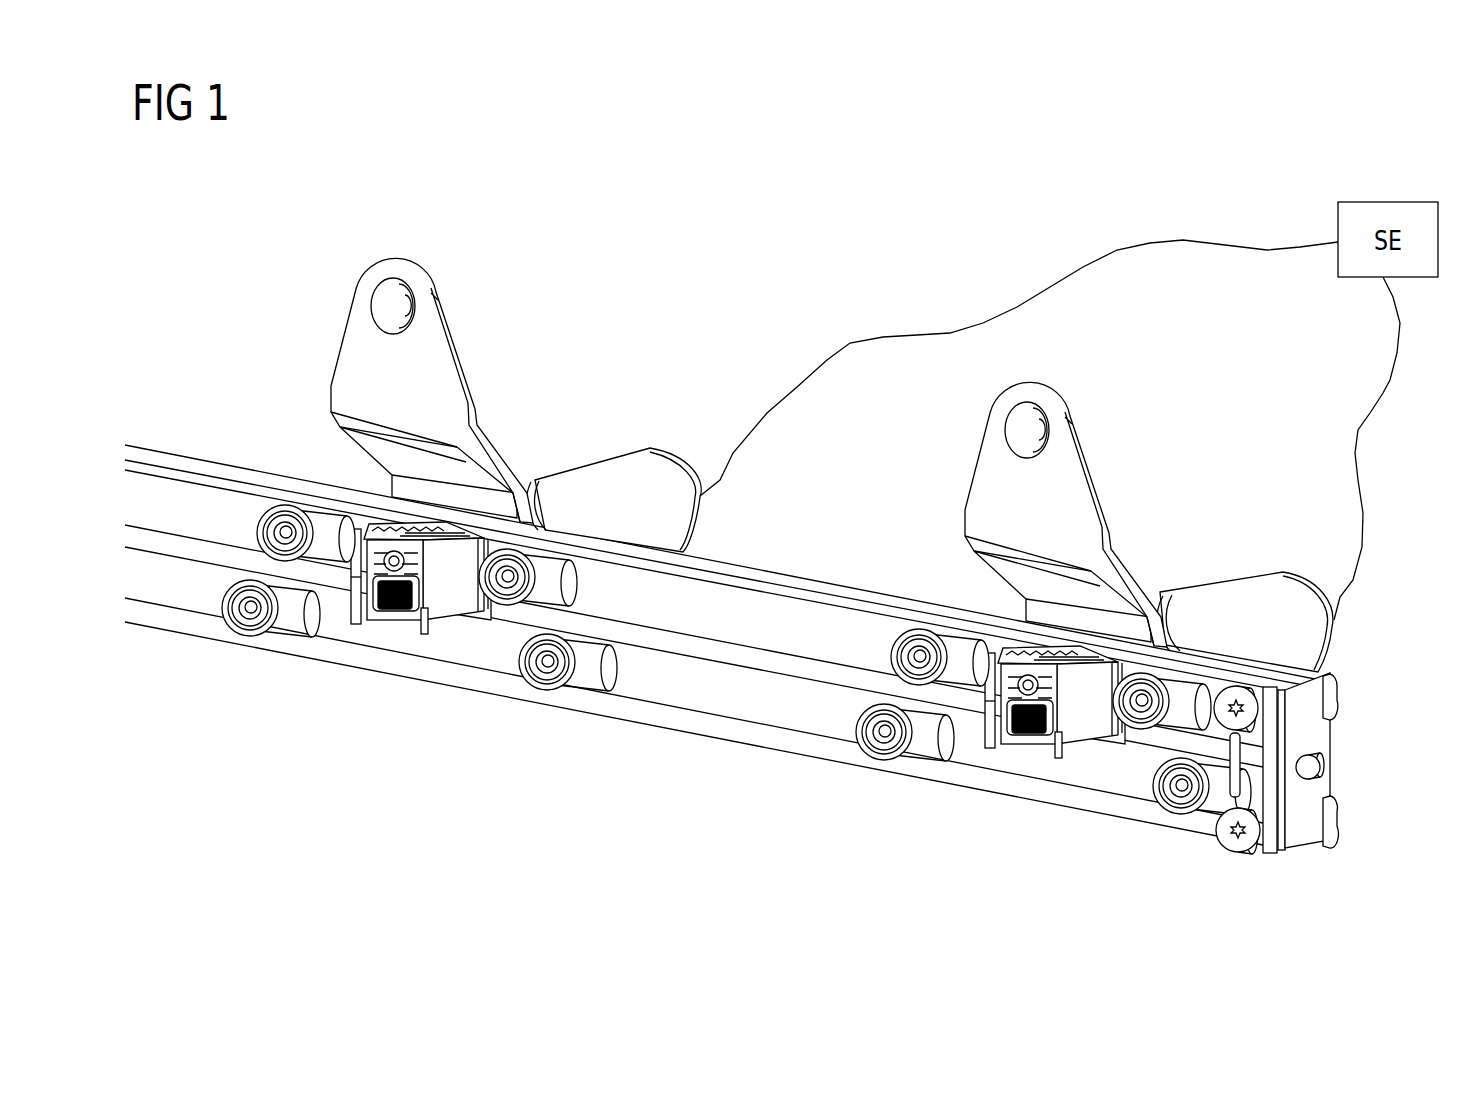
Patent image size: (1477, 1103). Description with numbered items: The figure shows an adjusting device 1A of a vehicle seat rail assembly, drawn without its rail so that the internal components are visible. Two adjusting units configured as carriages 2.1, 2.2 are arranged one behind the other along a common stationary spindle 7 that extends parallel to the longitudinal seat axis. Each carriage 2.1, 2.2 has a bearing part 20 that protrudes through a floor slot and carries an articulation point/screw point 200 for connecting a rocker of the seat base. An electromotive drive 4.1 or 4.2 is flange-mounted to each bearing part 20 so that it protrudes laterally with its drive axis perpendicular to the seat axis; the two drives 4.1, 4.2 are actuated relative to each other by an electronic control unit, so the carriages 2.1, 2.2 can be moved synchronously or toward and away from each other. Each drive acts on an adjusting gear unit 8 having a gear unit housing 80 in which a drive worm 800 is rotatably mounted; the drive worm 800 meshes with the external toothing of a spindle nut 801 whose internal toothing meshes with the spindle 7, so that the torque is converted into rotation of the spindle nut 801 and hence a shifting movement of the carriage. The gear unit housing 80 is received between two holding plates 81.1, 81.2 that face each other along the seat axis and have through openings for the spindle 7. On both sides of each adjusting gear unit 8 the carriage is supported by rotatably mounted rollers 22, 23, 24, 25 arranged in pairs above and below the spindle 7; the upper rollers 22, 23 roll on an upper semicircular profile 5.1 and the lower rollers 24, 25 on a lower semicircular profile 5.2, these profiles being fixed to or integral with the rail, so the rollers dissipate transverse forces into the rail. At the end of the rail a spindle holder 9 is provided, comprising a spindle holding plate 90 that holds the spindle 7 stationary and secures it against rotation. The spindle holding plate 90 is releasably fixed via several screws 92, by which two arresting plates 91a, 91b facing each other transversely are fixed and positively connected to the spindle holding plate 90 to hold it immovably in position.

The adjusting device 1A is at (705, 644).
The semicircular profile 5.1 is at (205, 468).
The spindle 7 is at (137, 545).
The semicircular profile 5.2 is at (175, 625).
The carriage 2.1 is at (1179, 496).
The carriage 2.2 is at (546, 366).
The bearing part 20 is at (723, 413).
The articulation point/screw point 200 is at (390, 292).
The electromotive drive 4.1 is at (1262, 570).
The electromotive drive 4.2 is at (605, 445).
The roller 22 is at (303, 553).
The roller 23 is at (505, 605).
The roller 24 is at (554, 692).
The roller 25 is at (250, 640).
The adjusting gear unit 8 is at (1050, 706).
The gear unit housing 80 is at (1000, 655).
The drive worm 800 is at (1050, 650).
The spindle nut 801 is at (1028, 760).
The holding plate 81.1 is at (1082, 745).
The holding plate 81.2 is at (988, 740).
The spindle holder 9 is at (1331, 765).
The spindle holding plate 90 is at (1300, 803).
The arresting plate 91a is at (1257, 780).
The arresting plate 91b is at (1323, 810).
The screw 92 is at (1303, 667).